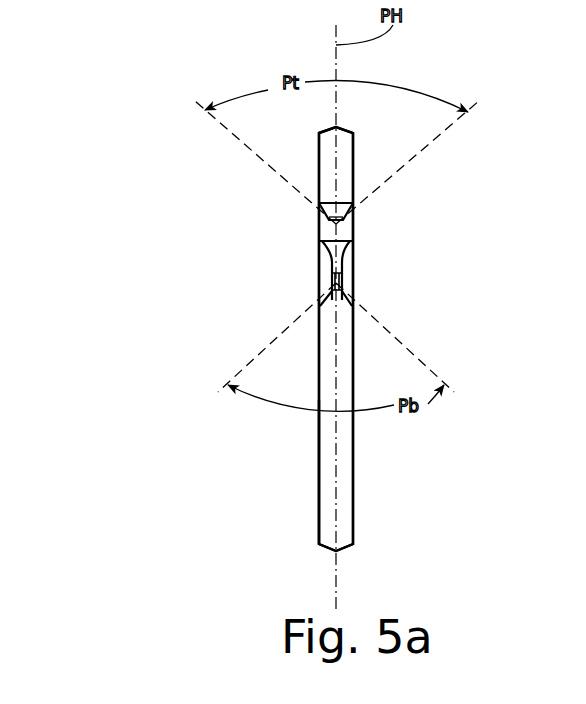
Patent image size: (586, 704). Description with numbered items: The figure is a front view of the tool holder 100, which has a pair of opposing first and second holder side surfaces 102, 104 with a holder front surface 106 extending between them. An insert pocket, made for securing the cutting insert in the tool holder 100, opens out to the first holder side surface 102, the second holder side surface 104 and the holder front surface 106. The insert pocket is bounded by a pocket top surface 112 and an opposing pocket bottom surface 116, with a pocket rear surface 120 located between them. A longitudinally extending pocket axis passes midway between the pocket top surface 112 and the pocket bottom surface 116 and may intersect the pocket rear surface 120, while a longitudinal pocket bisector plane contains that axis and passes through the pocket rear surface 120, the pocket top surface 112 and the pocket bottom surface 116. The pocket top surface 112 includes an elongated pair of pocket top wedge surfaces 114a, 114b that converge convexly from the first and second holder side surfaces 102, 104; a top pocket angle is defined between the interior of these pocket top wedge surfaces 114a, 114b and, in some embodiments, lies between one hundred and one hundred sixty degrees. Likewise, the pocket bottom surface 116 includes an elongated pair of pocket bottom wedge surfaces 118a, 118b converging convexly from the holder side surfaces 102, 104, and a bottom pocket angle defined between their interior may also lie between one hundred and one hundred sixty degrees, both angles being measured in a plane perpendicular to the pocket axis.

The tool holder 100 is at (140, 180).
The first holder side surface 102 is at (353, 461).
The second holder side surface 104 is at (318, 480).
The holder front surface 106 is at (340, 512).
The pocket top surface 112 is at (371, 230).
The pocket top wedge surface 114a is at (352, 212).
The pocket top wedge surface 114b is at (325, 219).
The pocket bottom surface 116 is at (315, 277).
The pocket bottom wedge surface 118a is at (353, 288).
The pocket bottom wedge surface 118b is at (320, 292).
The pocket rear surface 120 is at (368, 265).